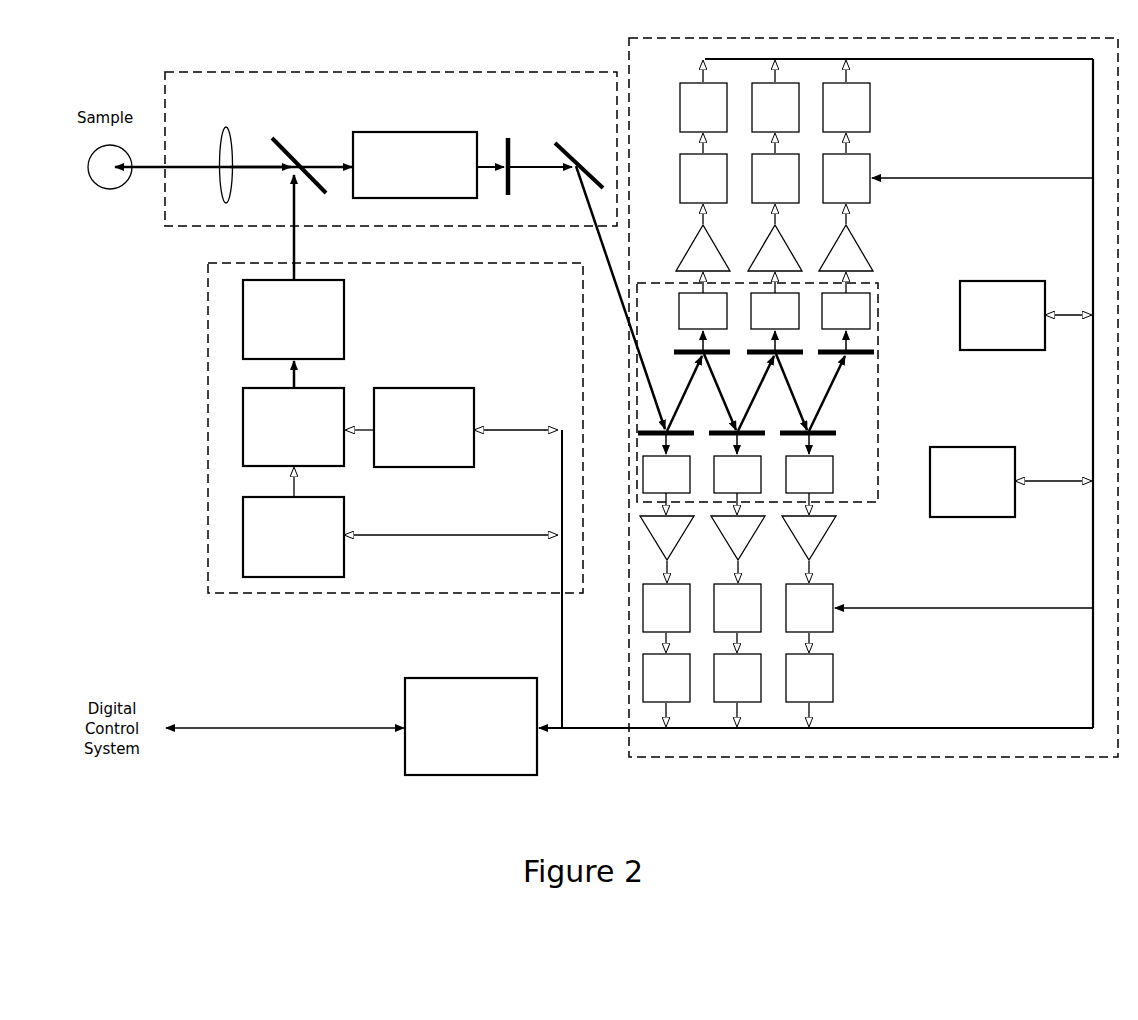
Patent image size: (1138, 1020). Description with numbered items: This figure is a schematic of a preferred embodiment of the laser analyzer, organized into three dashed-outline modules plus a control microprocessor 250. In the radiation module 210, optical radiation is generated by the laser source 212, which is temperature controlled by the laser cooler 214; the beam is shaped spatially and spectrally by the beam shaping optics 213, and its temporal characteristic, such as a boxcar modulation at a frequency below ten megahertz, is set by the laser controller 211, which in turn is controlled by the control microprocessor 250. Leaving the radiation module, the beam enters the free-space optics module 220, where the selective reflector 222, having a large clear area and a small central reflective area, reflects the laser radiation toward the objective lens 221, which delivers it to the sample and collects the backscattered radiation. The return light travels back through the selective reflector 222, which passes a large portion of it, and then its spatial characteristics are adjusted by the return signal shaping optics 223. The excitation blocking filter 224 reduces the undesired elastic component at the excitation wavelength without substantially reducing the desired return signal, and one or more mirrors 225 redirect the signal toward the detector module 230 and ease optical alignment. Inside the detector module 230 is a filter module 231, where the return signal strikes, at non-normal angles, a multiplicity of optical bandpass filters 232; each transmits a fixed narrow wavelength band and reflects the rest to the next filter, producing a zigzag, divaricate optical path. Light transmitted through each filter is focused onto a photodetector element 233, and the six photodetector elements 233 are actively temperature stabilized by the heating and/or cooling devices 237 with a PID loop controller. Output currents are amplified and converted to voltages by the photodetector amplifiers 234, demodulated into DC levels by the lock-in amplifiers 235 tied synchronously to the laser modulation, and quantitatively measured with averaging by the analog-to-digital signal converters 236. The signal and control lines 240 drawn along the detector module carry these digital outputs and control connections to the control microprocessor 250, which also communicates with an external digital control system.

The radiation module 210 is at (207, 472).
The laser controller 211 is at (400, 522).
The laser source 212 is at (293, 413).
The beam shaping optics 213 is at (293, 319).
The laser cooler 214 is at (451, 427).
The free-space optics module 220 is at (382, 72).
The objective lens 221 is at (232, 130).
The selective reflector 222 is at (283, 140).
The return signal shaping optics 223 is at (415, 165).
The excitation blocking filter 224 is at (511, 142).
The mirrors 225 is at (565, 146).
The detector module 230 is at (818, 38).
The filter module 231 is at (879, 395).
The optical bandpass filters 232 is at (875, 352).
The photodetector element 233 is at (756, 393).
The photodetector amplifiers 234 is at (756, 392).
The lock-in amplifiers 235 is at (867, 393).
The analog-to-digital signal converters 236 is at (756, 393).
The heating and/or cooling devices 237 is at (1010, 399).
The data bus 240 is at (617, 730).
The control microprocessor 250 is at (471, 726).